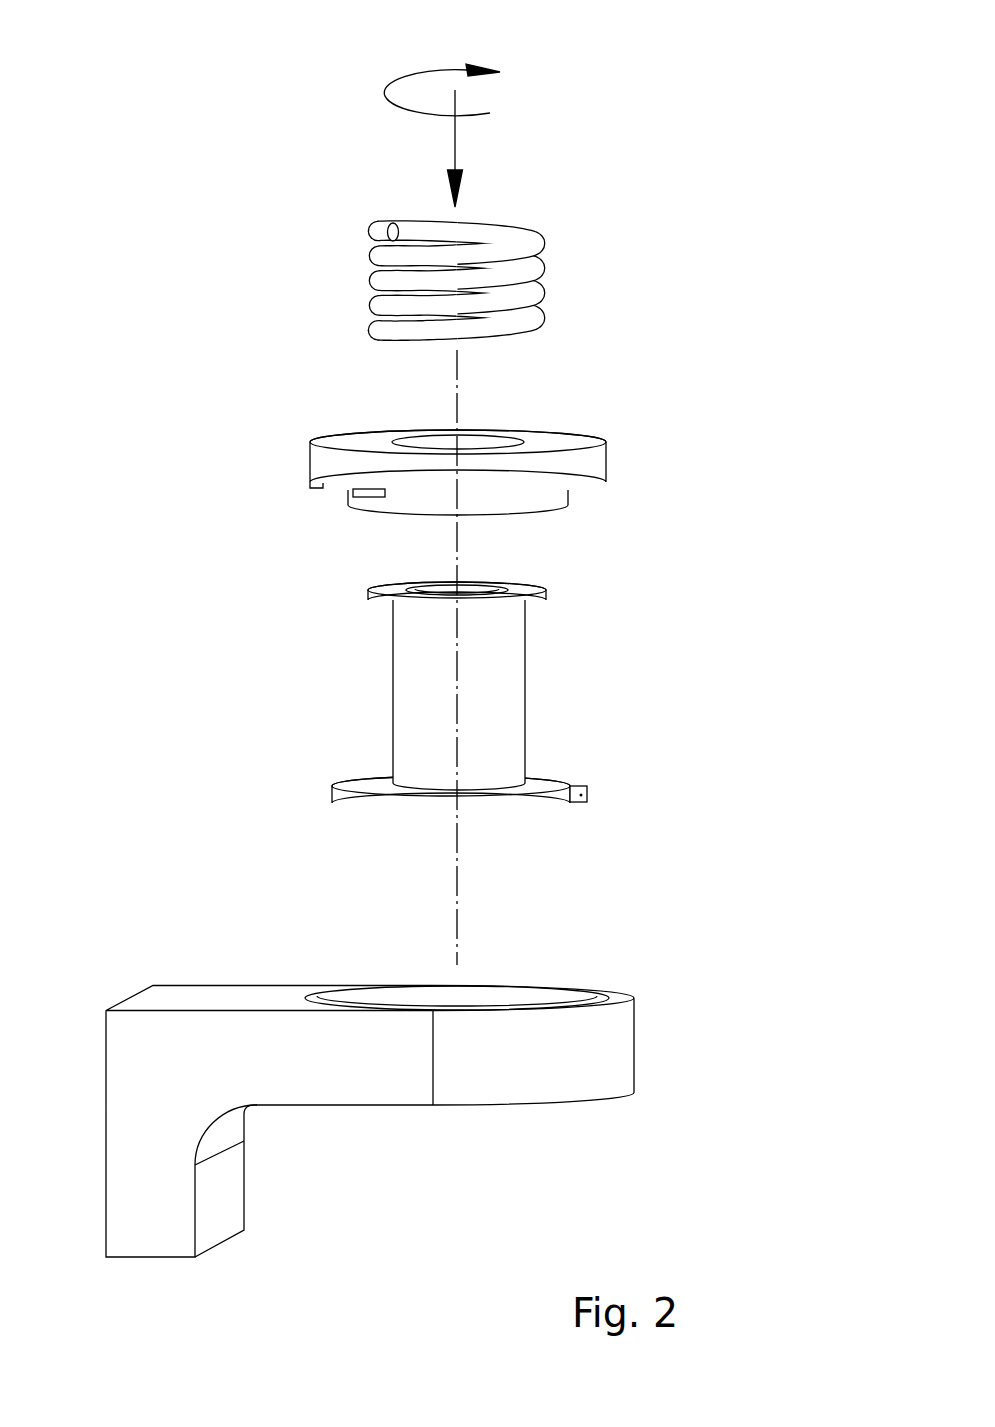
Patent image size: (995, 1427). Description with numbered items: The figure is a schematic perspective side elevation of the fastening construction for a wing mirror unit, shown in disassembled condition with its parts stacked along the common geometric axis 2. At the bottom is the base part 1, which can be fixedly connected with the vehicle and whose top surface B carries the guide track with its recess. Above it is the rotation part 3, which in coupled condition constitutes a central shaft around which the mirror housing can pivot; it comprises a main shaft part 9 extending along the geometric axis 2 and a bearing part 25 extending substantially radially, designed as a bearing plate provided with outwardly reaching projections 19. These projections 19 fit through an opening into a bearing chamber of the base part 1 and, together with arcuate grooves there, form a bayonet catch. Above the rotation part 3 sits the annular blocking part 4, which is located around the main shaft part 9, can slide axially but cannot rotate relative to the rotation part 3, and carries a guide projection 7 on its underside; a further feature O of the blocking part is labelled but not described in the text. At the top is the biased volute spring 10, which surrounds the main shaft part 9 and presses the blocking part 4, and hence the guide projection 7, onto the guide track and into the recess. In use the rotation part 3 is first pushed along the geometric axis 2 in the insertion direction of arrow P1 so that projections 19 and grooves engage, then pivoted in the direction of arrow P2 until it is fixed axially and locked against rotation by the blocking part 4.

The base part 1 is at (422, 1085).
The geometric axis 2 is at (458, 905).
The rotation part 3 is at (492, 728).
The blocking part 4 is at (483, 460).
The guide projection 7 is at (333, 487).
The main shaft part 9 is at (540, 700).
The volute spring 10 is at (545, 265).
The projections 19 is at (543, 802).
The bearing part 25 is at (602, 814).
The top surface B is at (210, 998).
The boss / projection O is at (587, 488).
The arrow P1 is at (458, 141).
The arrow P2 is at (412, 70).